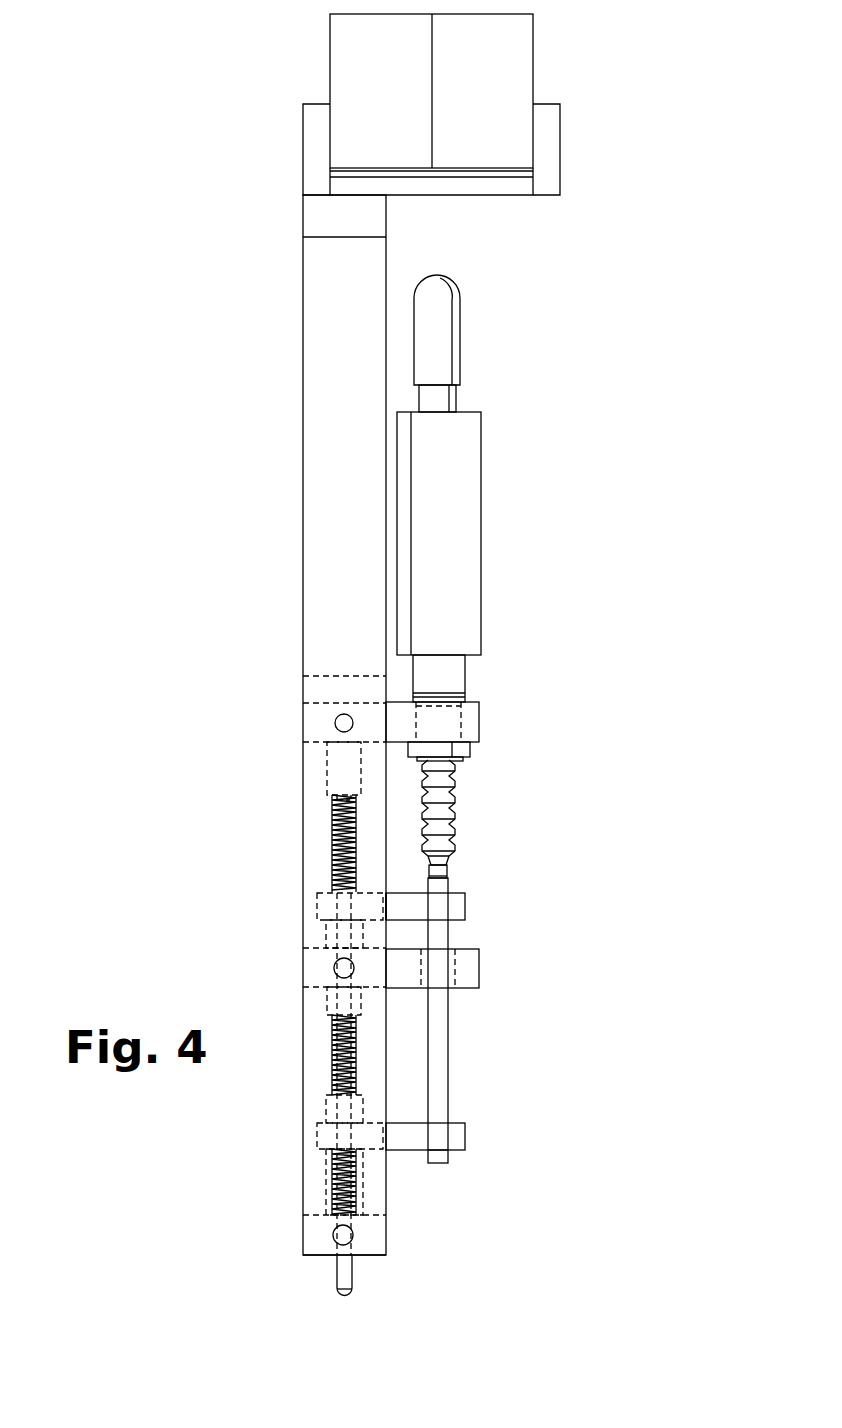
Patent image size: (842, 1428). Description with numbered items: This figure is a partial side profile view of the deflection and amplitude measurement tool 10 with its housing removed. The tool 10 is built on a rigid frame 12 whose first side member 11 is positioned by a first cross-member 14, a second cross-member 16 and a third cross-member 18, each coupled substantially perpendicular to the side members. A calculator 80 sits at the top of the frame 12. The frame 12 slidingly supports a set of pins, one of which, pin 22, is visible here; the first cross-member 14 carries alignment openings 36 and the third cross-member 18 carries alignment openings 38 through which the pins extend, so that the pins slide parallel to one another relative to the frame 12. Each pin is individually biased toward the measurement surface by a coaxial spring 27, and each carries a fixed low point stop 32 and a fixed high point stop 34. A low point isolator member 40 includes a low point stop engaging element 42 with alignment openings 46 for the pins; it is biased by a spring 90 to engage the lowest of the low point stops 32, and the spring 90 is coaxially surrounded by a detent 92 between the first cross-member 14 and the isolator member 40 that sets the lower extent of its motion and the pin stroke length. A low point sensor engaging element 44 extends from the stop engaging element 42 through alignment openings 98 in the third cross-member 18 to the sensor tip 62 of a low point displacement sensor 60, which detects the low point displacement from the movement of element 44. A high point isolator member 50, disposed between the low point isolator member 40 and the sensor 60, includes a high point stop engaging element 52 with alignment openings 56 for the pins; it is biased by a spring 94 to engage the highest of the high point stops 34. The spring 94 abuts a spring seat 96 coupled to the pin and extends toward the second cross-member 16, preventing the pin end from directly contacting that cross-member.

The deflection and amplitude measurement tool 10 is at (218, 120).
The first side member 11 is at (327, 374).
The frame 12 is at (292, 478).
The first cross-member 14 is at (315, 1233).
The second cross-member 16 is at (395, 725).
The third cross-member 18 is at (465, 965).
The pin 22 is at (340, 1275).
The spring 27 is at (335, 1030).
The low point stop 32 is at (330, 1107).
The high point stop 34 is at (327, 935).
The alignment opening 36 is at (345, 1250).
The alignment opening 38 is at (335, 965).
The low point isolator member 40 is at (470, 1145).
The low point stop engaging element 42 is at (452, 1135).
The low point sensor engaging element 44 is at (435, 1055).
The alignment openings 46 is at (335, 1140).
The high point isolator member 50 is at (477, 903).
The high point stop engaging element 52 is at (402, 908).
The alignment openings 56 is at (340, 908).
The low point displacement sensor 60 is at (458, 518).
The sensor tip 62 is at (440, 872).
The calculator 80 is at (406, 118).
The spring 90 is at (358, 1195).
The detent 92 is at (360, 1172).
The spring 94 is at (340, 836).
The spring seat 96 is at (340, 768).
The alignment openings 98 is at (443, 980).